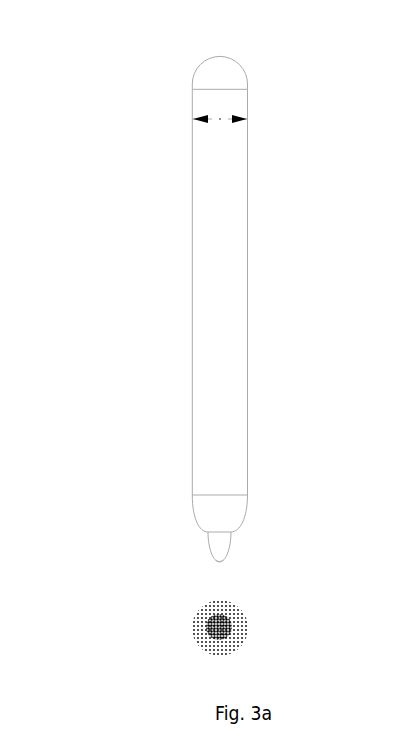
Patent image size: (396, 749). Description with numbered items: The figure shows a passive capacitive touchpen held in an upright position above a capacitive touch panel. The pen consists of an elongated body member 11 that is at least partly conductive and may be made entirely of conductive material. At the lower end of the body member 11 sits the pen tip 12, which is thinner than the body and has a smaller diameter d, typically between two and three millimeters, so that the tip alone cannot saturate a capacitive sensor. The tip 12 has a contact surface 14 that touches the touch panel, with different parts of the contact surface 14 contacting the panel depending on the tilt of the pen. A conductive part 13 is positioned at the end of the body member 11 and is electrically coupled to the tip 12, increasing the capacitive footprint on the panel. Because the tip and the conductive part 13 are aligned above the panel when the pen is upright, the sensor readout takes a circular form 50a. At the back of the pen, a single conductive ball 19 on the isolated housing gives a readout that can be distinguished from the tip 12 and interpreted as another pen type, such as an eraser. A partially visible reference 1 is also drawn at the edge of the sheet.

The body member 11 is at (131, 292).
The conductive ball 19 is at (238, 67).
The conductive part 13 is at (218, 513).
The pen tip 12 is at (215, 545).
The contact surface 14 is at (227, 555).
The reference numeral (cut off) 1 is at (391, 606).
The circular sensor readout 50a is at (248, 633).
The diameter d is at (219, 139).